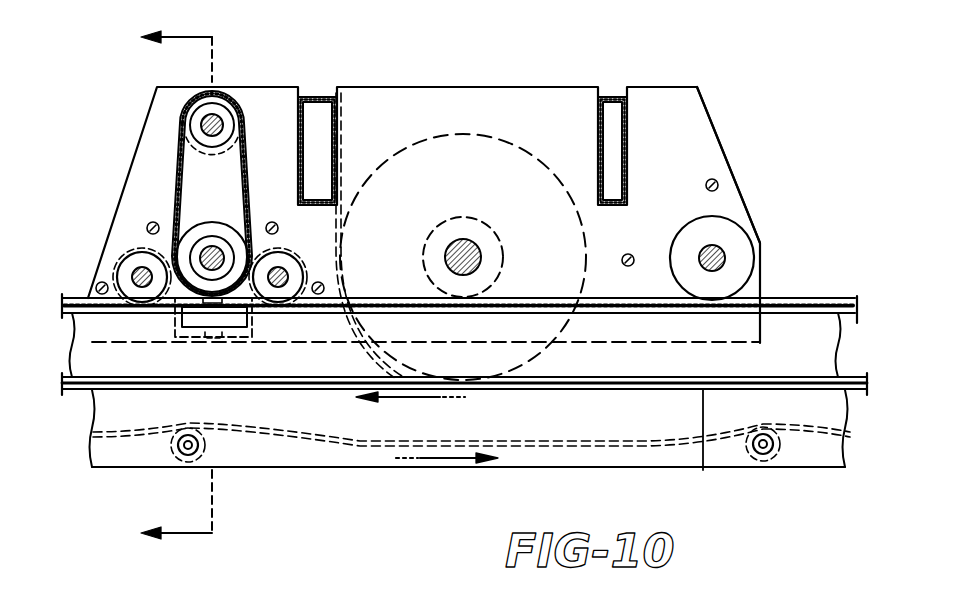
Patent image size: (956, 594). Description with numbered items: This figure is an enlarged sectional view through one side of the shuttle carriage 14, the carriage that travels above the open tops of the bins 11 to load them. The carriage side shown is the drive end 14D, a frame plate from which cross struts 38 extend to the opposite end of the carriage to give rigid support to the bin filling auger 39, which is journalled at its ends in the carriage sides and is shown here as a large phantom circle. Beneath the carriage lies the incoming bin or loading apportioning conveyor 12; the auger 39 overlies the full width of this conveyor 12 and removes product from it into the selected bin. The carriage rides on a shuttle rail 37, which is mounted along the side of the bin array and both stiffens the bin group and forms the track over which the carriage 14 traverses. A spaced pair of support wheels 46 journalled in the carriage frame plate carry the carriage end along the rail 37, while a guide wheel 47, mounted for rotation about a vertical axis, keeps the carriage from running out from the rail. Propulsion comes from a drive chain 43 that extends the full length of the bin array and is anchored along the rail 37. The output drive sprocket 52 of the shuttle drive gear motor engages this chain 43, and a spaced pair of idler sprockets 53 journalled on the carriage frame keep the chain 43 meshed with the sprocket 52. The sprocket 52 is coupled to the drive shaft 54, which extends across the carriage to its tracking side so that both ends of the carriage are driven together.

The bin 11 is at (185, 292).
The incoming bin or loading apportioning conveyor 12 is at (730, 433).
The shuttle carriage 14 is at (521, 88).
The drive end 14D is at (712, 118).
The shuttle rail 37 is at (782, 375).
The cross strut 38 is at (318, 96).
The bin filling auger 39 is at (446, 128).
The drive chain 43 is at (82, 297).
The support wheel 46 is at (198, 225).
The guide wheel 47 is at (185, 312).
The output drive sprocket 52 is at (198, 137).
The idler sprocket 53 is at (145, 262).
The drive shaft 54 is at (222, 118).